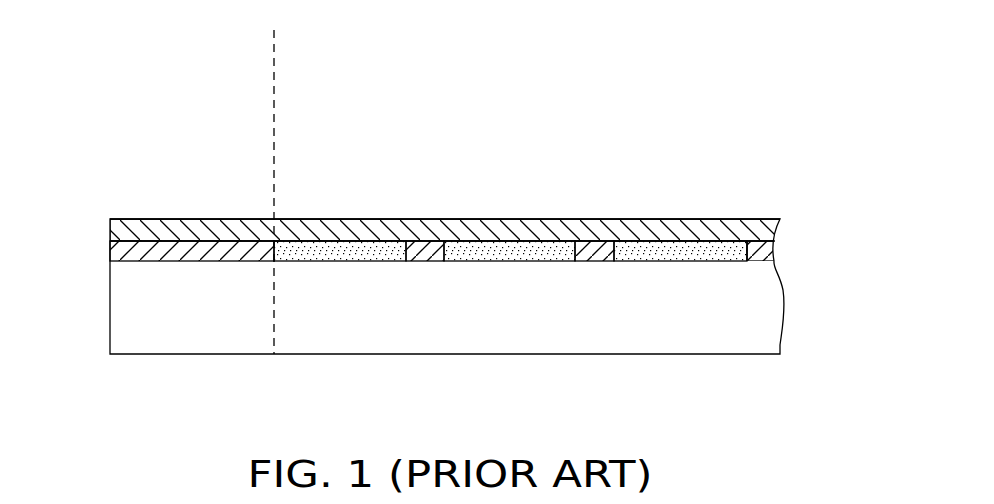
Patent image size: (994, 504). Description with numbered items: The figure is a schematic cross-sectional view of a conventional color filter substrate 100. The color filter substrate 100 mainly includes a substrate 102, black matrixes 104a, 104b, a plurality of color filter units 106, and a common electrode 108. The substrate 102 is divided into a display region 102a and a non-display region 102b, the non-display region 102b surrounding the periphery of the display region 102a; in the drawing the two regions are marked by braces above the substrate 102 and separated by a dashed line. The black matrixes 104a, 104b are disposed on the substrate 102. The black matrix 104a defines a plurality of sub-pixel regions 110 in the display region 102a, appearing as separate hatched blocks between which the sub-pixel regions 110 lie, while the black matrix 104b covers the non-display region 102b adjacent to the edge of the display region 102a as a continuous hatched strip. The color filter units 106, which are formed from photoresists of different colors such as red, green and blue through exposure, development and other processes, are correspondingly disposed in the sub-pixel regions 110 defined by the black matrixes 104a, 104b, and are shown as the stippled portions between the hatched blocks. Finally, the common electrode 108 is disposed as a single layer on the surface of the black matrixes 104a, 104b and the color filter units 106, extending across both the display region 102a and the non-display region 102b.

The color filter substrate 100 is at (732, 421).
The substrate 102 is at (766, 311).
The display region 102a is at (280, 54).
The non-display region 102b is at (108, 54).
The black matrix 104a is at (760, 250).
The black matrix 104b is at (124, 248).
The color filter units 106 is at (340, 250).
The common electrode 108 is at (192, 228).
The sub-pixel regions 110 is at (349, 265).